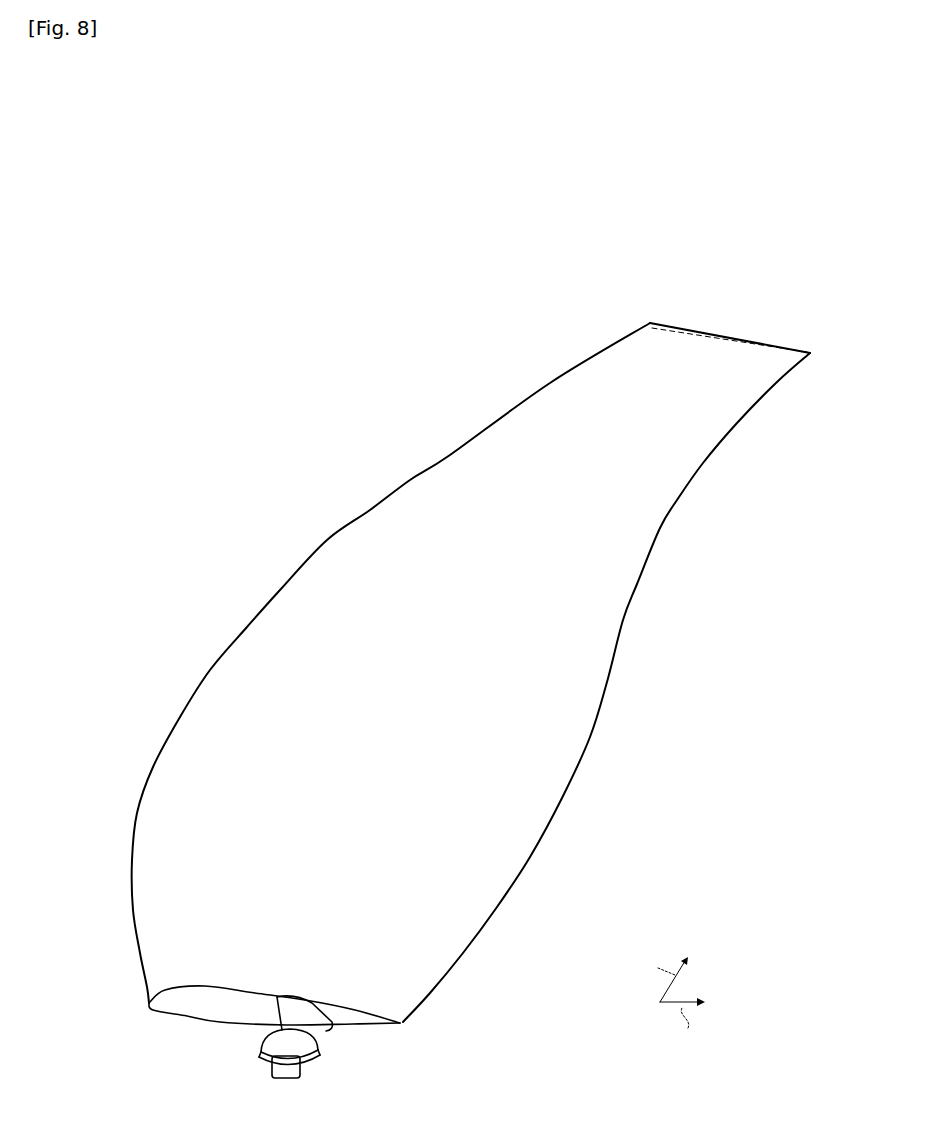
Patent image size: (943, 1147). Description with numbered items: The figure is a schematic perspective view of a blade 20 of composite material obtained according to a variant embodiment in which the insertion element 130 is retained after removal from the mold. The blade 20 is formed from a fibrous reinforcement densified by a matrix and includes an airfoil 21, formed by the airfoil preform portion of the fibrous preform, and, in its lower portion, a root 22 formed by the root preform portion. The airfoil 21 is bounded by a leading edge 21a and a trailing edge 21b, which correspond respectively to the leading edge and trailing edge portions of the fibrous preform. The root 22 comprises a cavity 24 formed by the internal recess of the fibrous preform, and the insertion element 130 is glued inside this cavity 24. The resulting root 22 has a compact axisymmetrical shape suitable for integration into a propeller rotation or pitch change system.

The blade 20 is at (318, 423).
The airfoil 21 is at (522, 640).
The leading edge 21a is at (279, 588).
The trailing edge 21b is at (607, 682).
The root 22 is at (320, 1048).
The cavity 24 is at (267, 1032).
The insertion element 130 is at (307, 1077).